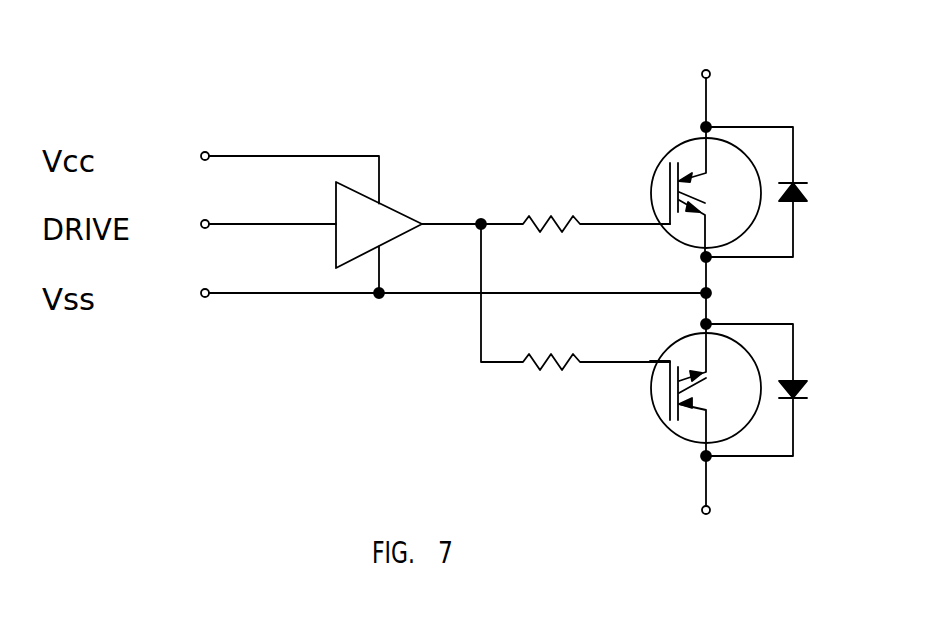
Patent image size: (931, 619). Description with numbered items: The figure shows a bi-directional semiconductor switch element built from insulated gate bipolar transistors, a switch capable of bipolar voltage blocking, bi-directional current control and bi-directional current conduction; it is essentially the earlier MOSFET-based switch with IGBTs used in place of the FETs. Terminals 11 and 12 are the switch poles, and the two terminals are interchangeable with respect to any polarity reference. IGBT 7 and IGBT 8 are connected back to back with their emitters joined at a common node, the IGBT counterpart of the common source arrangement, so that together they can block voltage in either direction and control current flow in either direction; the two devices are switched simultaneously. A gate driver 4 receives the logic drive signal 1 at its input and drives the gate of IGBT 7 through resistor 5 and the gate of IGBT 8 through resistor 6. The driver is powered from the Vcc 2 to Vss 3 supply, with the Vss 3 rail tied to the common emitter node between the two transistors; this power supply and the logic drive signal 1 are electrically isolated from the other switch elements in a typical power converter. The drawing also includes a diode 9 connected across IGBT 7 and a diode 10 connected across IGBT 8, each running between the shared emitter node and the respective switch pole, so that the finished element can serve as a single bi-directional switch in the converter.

The logic drive signal 1 is at (249, 227).
The Vcc 2 is at (268, 217).
The Vss 3 is at (434, 299).
The gate driver 4 is at (427, 269).
The resistor 5 is at (594, 203).
The resistor 6 is at (594, 344).
The IGBT 7 is at (689, 192).
The IGBT 8 is at (689, 390).
The diode 9 is at (775, 192).
The diode 10 is at (778, 390).
The terminal 11 is at (730, 93).
The terminal 12 is at (732, 493).